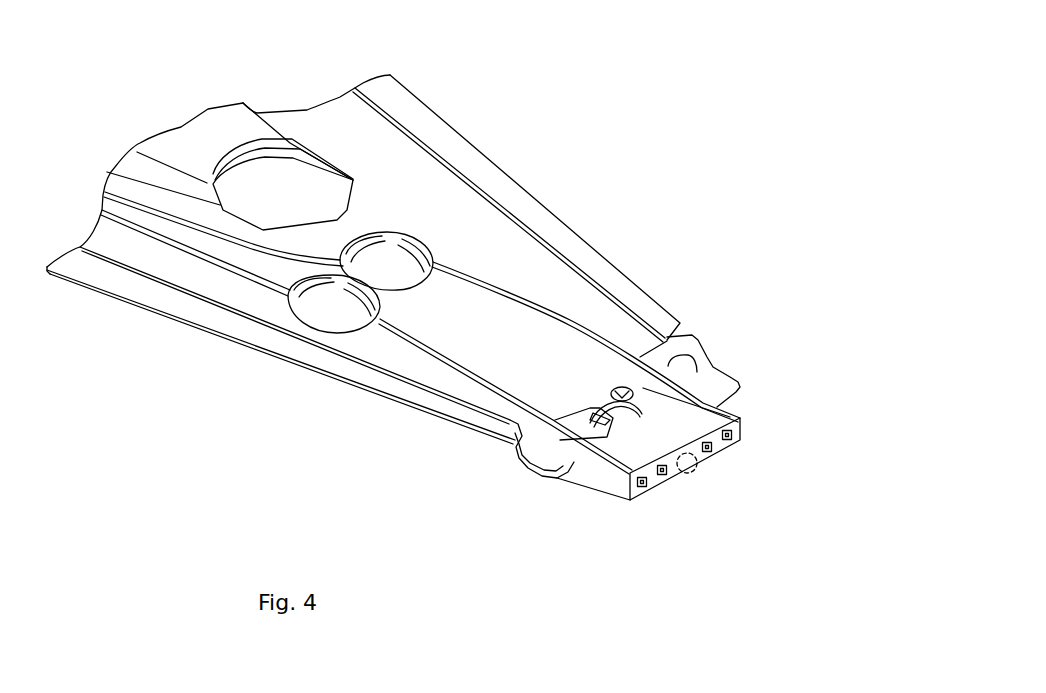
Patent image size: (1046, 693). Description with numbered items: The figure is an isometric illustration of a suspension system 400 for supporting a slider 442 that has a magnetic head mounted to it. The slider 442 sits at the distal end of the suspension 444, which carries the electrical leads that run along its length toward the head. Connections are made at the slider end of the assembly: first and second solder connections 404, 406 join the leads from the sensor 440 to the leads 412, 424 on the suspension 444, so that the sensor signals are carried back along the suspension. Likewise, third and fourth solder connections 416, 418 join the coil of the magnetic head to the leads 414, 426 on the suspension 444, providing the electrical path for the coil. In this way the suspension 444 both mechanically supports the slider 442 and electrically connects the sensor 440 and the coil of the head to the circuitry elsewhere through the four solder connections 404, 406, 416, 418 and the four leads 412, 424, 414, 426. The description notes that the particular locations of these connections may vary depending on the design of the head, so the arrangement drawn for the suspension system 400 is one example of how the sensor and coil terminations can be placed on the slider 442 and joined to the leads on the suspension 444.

The suspension system 400 is at (836, 128).
The suspension 444 is at (545, 188).
The lead 414 is at (593, 330).
The lead 412 is at (403, 345).
The lead 424 is at (455, 360).
The lead 426 is at (512, 293).
The slider 442 is at (572, 493).
The first solder connection 404 is at (625, 495).
The second solder connection 406 is at (660, 480).
The third solder connection 416 is at (740, 430).
The fourth solder connection 418 is at (712, 453).
The sensor 440 is at (700, 478).